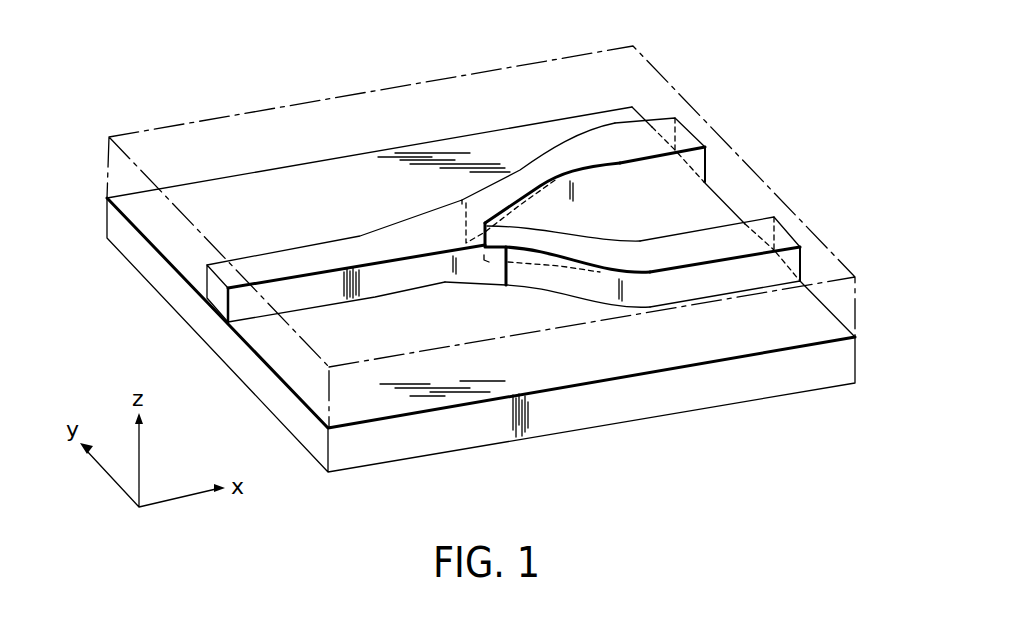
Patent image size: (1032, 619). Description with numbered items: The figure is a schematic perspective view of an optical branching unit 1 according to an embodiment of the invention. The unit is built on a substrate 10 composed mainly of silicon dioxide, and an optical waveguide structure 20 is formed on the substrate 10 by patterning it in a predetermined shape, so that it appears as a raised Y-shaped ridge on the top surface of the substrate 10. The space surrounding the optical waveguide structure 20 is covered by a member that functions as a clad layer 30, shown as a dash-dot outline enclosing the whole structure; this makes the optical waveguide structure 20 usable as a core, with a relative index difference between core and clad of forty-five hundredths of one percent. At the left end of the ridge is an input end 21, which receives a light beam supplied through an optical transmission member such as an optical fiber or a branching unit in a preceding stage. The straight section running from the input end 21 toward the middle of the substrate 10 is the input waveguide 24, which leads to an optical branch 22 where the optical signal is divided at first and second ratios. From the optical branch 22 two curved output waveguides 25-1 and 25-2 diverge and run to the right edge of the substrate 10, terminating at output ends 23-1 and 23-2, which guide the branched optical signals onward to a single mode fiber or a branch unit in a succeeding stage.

The optical branching unit 1 is at (555, 85).
The substrate 10 is at (559, 422).
The optical waveguide structure 20 is at (293, 243).
The input end 21 is at (219, 300).
The optical branch 22 is at (472, 274).
The output end 23-1 is at (692, 131).
The output end 23-2 is at (787, 223).
The input waveguide 24 is at (420, 233).
The output waveguide 25-1 is at (530, 172).
The output waveguide 25-2 is at (607, 254).
The clad layer 30 is at (657, 62).